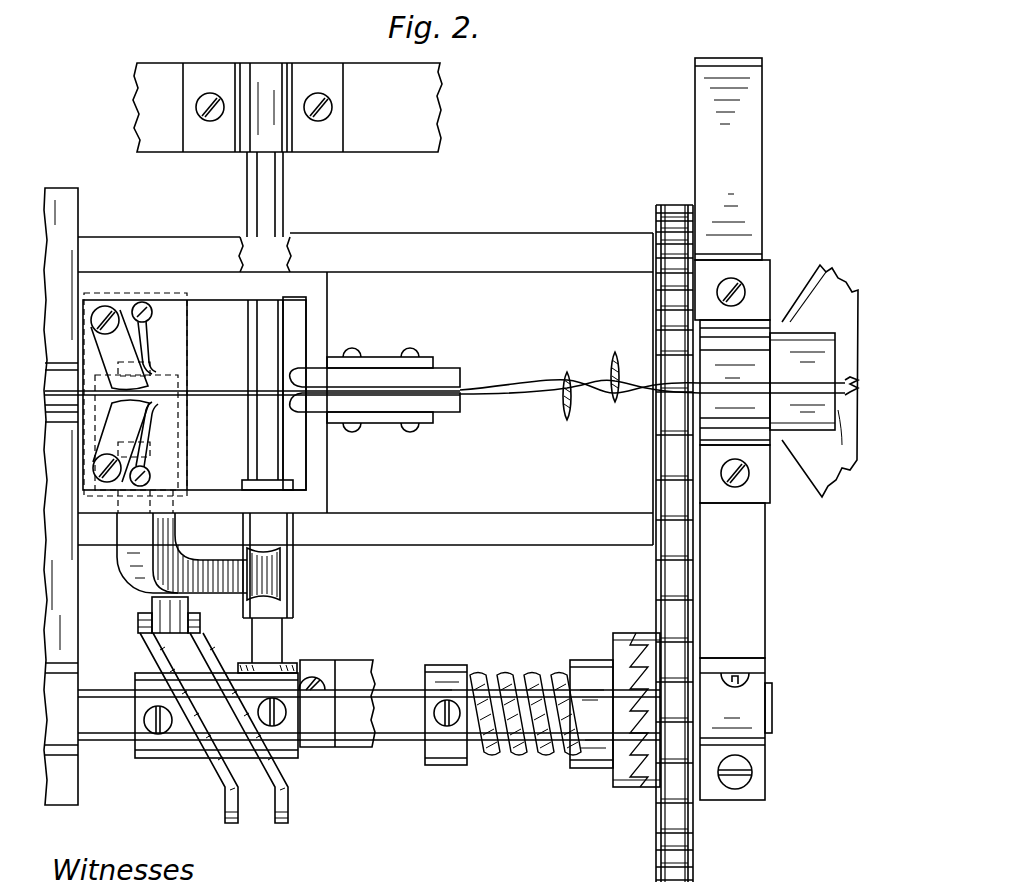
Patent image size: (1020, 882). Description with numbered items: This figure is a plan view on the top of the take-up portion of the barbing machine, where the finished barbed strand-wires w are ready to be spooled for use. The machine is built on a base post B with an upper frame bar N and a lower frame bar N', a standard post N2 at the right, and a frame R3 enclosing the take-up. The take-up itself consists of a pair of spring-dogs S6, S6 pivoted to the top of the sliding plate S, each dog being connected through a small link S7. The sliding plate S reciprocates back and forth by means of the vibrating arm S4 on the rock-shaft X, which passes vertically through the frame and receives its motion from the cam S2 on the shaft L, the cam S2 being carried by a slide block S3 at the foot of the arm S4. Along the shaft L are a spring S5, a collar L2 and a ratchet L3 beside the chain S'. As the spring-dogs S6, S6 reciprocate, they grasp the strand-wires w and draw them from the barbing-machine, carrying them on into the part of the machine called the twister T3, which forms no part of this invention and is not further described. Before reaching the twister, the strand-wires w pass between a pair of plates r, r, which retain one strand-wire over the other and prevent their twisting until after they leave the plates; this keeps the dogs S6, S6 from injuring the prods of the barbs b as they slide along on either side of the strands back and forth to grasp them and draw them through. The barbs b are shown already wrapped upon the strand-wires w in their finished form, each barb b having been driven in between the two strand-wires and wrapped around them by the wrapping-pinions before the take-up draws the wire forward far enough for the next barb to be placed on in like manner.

The base post B is at (61, 496).
The upper frame bar N is at (365, 252).
The lower frame bar N' is at (365, 530).
The standard post N2 is at (728, 159).
The frame R3 is at (437, 389).
The rock-shaft X is at (267, 412).
The sliding plate S is at (194, 403).
The chain S' is at (660, 543).
The cam S2 is at (268, 772).
The slide block S3 is at (156, 605).
The vibrating arm S4 is at (198, 556).
The spring S5 is at (525, 698).
The spring-dogs S6 is at (120, 394).
The links S7 is at (158, 323).
The wire w is at (518, 396).
The plates r is at (375, 390).
The barb b is at (565, 372).
The twister T3 is at (779, 381).
The shaft L is at (369, 712).
The collar L2 is at (591, 714).
The ratchet L3 is at (636, 710).